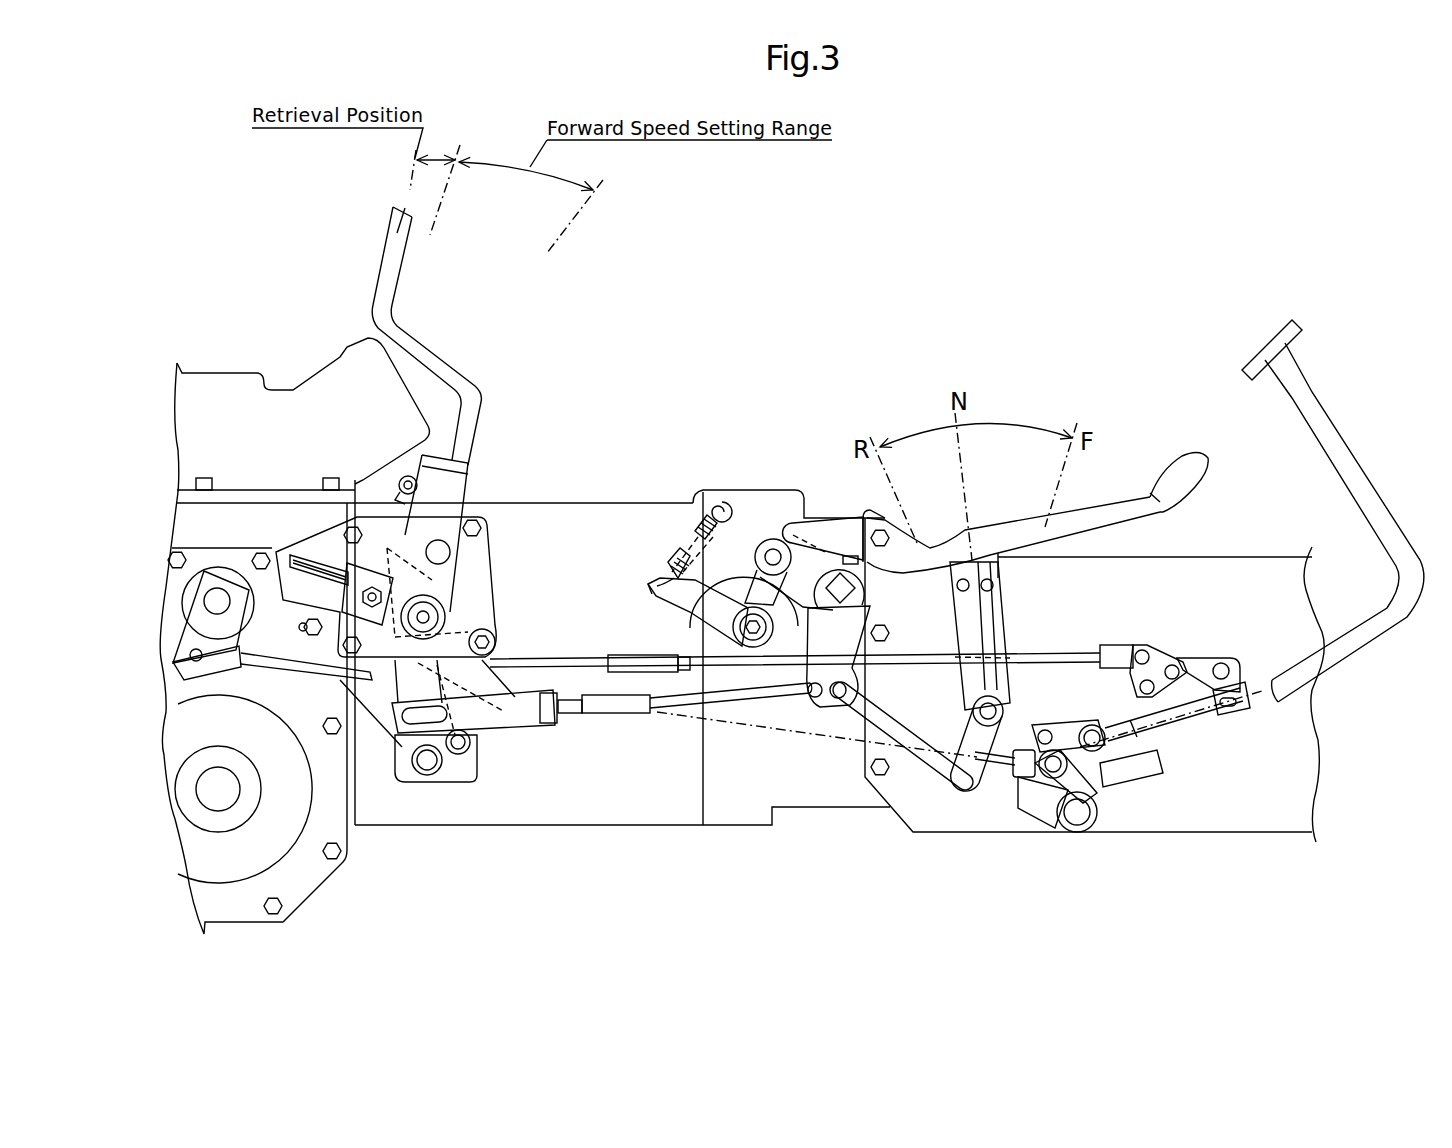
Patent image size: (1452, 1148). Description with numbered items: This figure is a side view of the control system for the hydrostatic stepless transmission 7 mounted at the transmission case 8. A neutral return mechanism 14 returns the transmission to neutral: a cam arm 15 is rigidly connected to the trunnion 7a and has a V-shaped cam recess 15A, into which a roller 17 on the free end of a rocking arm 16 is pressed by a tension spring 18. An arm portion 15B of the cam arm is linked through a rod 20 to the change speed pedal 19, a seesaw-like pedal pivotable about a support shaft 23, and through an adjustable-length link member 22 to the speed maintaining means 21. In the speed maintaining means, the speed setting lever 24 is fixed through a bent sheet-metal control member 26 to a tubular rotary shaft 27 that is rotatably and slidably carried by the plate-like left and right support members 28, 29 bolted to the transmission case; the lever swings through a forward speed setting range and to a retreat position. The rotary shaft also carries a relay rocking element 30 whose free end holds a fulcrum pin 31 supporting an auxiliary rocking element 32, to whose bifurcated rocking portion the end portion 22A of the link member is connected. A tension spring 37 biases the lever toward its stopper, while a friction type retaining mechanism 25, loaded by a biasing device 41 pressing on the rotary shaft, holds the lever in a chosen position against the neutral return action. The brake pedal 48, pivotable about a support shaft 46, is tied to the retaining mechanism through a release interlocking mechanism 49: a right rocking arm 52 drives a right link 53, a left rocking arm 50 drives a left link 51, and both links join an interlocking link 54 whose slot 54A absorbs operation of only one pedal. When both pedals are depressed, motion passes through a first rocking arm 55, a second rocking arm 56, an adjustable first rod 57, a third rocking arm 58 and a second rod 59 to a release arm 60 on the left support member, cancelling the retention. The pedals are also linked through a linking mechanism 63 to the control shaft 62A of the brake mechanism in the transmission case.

The hydrostatic stepless transmission 7 is at (752, 826).
The trunnion 7a is at (858, 587).
The transmission case 8 is at (615, 826).
The neutral return mechanism 14 is at (753, 523).
The cam arm 15 is at (817, 717).
The V-shaped cam recess 15A is at (722, 614).
The arm portion 15B is at (855, 677).
The rocking arm 16 is at (772, 631).
The roller 17 is at (773, 538).
The tension spring 18 is at (693, 505).
The change speed pedal 19 is at (1114, 512).
The rod 20 is at (922, 766).
The speed maintaining means 21 is at (493, 509).
The link member 22 is at (724, 714).
The end portion 22A is at (543, 725).
The support shaft 23 is at (990, 705).
The speed setting lever 24 is at (381, 265).
The friction type retaining mechanism 25 is at (464, 577).
The control member 26 is at (456, 482).
The tubular rotary shaft 27 is at (445, 612).
The left support member 28 is at (488, 540).
The right support member 29 is at (361, 677).
The relay rocking element 30 is at (398, 696).
The fulcrum pin 31 is at (430, 770).
The auxiliary rocking element 32 is at (393, 755).
The tension spring 37 is at (405, 477).
The biasing device 41 is at (323, 546).
The support shaft 46 is at (1076, 822).
The right brake pedal 48 is at (1265, 350).
The release interlocking mechanism 49 is at (1190, 643).
The left rocking arm 50 is at (1078, 818).
The left link 51 is at (1068, 723).
The right rocking arm 52 is at (1035, 808).
The right link 53 is at (1097, 786).
The interlocking link 54 is at (1180, 725).
The slot 54A is at (1246, 704).
The first rocking arm 55 is at (1205, 660).
The second rocking arm 56 is at (1165, 645).
The first rod 57 is at (1046, 656).
The third rocking arm 58 is at (490, 660).
The second rod 59 is at (305, 626).
The release arm 60 is at (295, 560).
The control shaft 62A is at (217, 588).
The linking mechanism 63 is at (270, 678).